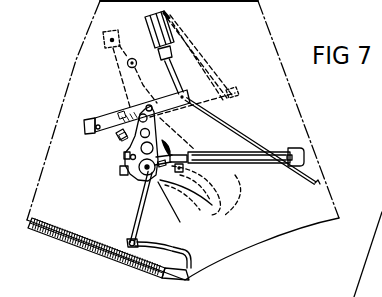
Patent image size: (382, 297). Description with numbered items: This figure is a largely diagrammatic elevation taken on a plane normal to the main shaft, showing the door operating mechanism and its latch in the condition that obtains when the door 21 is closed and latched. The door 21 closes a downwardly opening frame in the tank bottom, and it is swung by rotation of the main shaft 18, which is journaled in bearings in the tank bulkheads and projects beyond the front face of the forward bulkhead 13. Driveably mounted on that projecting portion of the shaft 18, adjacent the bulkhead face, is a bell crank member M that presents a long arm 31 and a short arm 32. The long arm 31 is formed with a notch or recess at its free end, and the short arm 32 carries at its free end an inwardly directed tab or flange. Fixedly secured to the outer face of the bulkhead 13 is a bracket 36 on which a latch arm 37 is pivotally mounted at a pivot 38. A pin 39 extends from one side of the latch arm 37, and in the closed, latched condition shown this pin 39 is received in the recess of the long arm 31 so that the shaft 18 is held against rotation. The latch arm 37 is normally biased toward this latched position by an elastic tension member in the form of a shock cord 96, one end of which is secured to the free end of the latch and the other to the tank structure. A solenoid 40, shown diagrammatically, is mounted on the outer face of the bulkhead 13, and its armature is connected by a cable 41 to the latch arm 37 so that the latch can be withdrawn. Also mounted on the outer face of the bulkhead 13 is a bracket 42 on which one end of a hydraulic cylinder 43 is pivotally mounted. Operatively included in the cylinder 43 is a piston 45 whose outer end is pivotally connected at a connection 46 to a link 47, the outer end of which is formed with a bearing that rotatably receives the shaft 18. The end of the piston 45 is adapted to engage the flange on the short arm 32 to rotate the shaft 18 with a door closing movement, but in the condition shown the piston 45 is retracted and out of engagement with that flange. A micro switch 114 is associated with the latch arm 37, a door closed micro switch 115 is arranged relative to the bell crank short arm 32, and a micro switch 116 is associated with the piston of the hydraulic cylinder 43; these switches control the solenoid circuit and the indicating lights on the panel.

The forward bulkhead 13 is at (304, 112).
The main shaft 18 is at (143, 179).
The door 21 is at (106, 252).
The long arm 31 is at (178, 139).
The short arm 32 is at (118, 160).
The bracket 36 is at (90, 121).
The latch arm 37 is at (120, 110).
The pivot 38 is at (100, 130).
The pin 39 is at (149, 104).
The solenoid 40 is at (169, 24).
The cable 41 is at (170, 70).
The bracket 42 is at (304, 157).
The hydraulic cylinder 43 is at (246, 160).
The piston 45 is at (222, 197).
The pivotal connection 46 is at (170, 160).
The link 47 is at (158, 166).
The shock cord 96 is at (243, 137).
The micro switch 114 is at (119, 140).
The door closed micro switch 115 is at (124, 176).
The micro switch 116 is at (181, 176).
The bell crank member M is at (116, 167).